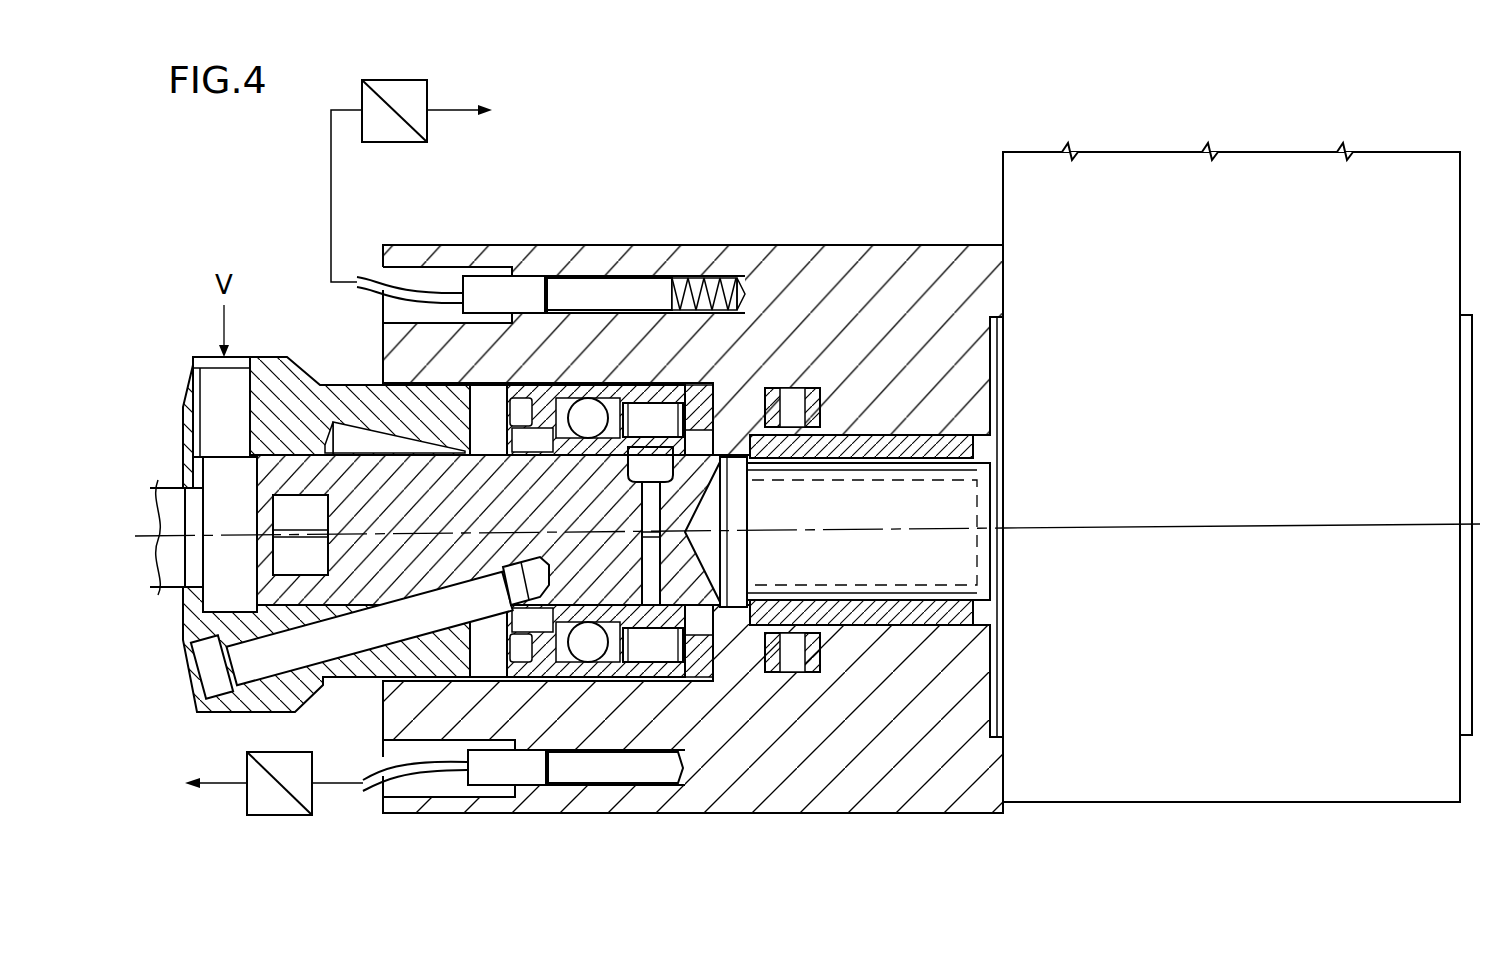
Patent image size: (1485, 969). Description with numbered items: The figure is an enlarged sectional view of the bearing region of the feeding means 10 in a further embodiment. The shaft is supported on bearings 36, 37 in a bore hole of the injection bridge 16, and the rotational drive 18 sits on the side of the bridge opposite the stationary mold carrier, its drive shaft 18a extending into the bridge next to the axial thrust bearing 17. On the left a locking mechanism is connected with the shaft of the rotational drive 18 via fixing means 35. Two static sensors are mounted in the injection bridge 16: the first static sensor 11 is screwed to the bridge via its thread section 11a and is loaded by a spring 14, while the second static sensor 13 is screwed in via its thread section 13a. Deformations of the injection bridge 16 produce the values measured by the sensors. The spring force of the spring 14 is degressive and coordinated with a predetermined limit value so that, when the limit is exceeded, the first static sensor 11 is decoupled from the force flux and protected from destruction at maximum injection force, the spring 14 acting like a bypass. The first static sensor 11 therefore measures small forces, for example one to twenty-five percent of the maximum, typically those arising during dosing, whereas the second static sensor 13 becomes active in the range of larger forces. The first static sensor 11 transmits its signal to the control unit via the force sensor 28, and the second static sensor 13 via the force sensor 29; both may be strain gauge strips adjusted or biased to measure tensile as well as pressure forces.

The feeding means 10 is at (168, 508).
The first static sensor 11 is at (600, 293).
The thread section 11a is at (528, 273).
The second static sensor 13 is at (620, 768).
The thread section 13a is at (512, 788).
The spring 14 is at (703, 277).
The injection bridge 16 is at (878, 263).
The axial thrust bearing 17 is at (793, 413).
The rotational drive 18 is at (1230, 348).
The drive shaft 18a is at (946, 516).
The force sensor 28 is at (393, 130).
The force sensor 29 is at (283, 810).
The fixing means 35 is at (315, 637).
The bearing 36 is at (587, 655).
The bearing 37 is at (667, 648).